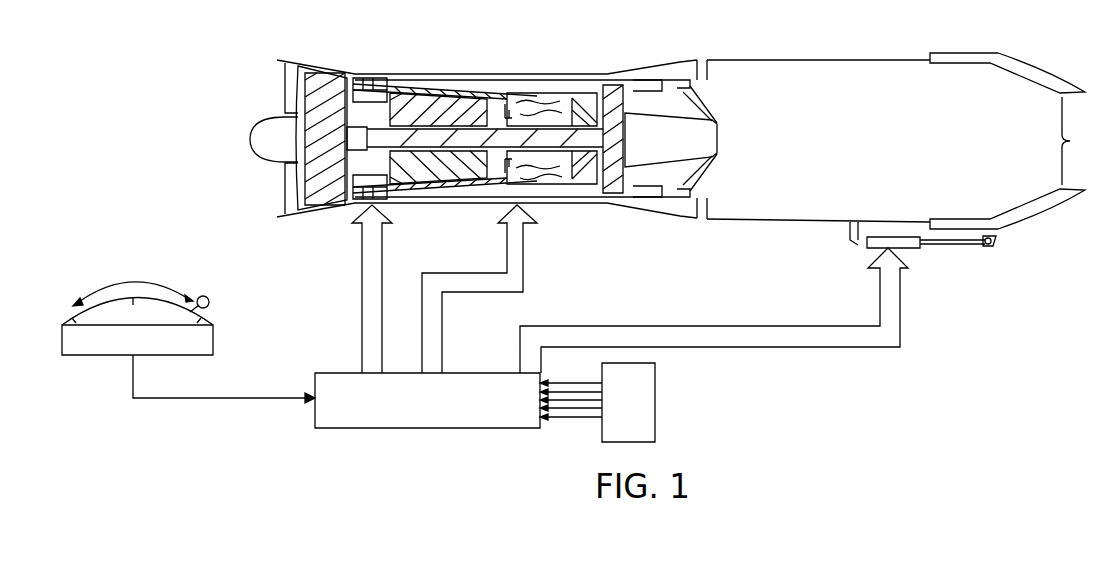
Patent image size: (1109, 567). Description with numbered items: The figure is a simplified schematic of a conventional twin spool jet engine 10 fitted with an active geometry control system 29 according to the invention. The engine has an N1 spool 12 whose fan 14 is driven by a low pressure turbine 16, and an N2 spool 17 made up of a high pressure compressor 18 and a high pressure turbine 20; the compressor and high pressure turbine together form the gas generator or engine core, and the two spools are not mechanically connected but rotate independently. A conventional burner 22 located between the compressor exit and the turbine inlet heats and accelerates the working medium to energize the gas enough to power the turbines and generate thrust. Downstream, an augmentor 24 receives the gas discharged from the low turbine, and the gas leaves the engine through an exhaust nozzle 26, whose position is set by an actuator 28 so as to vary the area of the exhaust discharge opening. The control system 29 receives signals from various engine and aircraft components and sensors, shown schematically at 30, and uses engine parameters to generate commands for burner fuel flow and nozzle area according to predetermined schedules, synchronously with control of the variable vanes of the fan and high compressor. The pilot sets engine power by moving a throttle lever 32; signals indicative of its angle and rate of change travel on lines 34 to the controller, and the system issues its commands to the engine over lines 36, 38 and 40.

The jet engine 10 is at (673, 48).
The N1 spool 12 is at (377, 122).
The fan 14 is at (322, 80).
The low pressure turbine 16 is at (613, 97).
The N2 spool 17 is at (505, 93).
The high pressure compressor 18 is at (410, 100).
The high pressure turbine 20 is at (580, 100).
The burner 22 is at (545, 172).
The augmentor 24 is at (788, 222).
The exhaust nozzle 26 is at (1052, 217).
The actuator 28 is at (918, 248).
The active geometry control system 29 is at (487, 429).
The engine and aircraft components and sensors 30 is at (655, 390).
The throttle lever 32 is at (210, 300).
The lines 34 is at (255, 381).
The line 36 is at (362, 293).
The line 38 is at (527, 272).
The line 40 is at (733, 325).